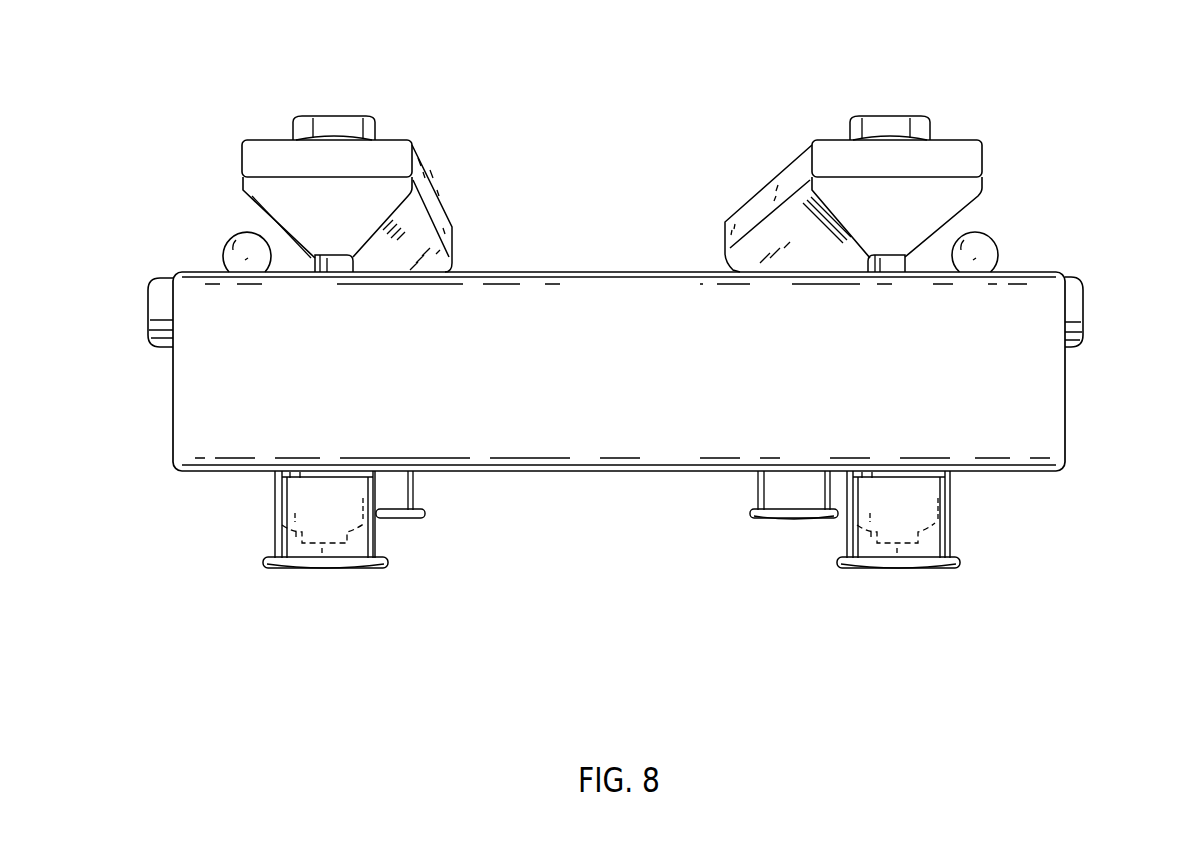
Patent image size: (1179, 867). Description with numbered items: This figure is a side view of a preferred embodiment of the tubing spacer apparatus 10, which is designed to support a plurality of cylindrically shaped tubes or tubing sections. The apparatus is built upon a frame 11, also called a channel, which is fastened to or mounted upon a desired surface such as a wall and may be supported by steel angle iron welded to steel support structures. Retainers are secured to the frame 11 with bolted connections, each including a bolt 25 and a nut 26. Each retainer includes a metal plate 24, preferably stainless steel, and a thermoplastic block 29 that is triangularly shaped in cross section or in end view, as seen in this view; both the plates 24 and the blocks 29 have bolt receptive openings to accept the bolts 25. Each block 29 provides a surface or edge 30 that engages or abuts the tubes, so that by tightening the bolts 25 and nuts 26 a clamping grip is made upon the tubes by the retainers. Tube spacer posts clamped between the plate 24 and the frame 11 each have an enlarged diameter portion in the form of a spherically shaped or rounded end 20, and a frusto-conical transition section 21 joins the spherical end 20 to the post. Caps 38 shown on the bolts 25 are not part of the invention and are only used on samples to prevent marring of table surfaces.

The tubing spacer apparatus 10 is at (962, 67).
The frame 11 is at (605, 460).
The spherical end 20 is at (993, 252).
The frusto-conical transition section 21 is at (1078, 295).
The plate 24 is at (283, 148).
The bolt 25 is at (350, 123).
The nut 26 is at (320, 520).
The thermoplastic triangular block 29 is at (347, 220).
The edge 30 is at (343, 260).
The cap 38 is at (383, 563).